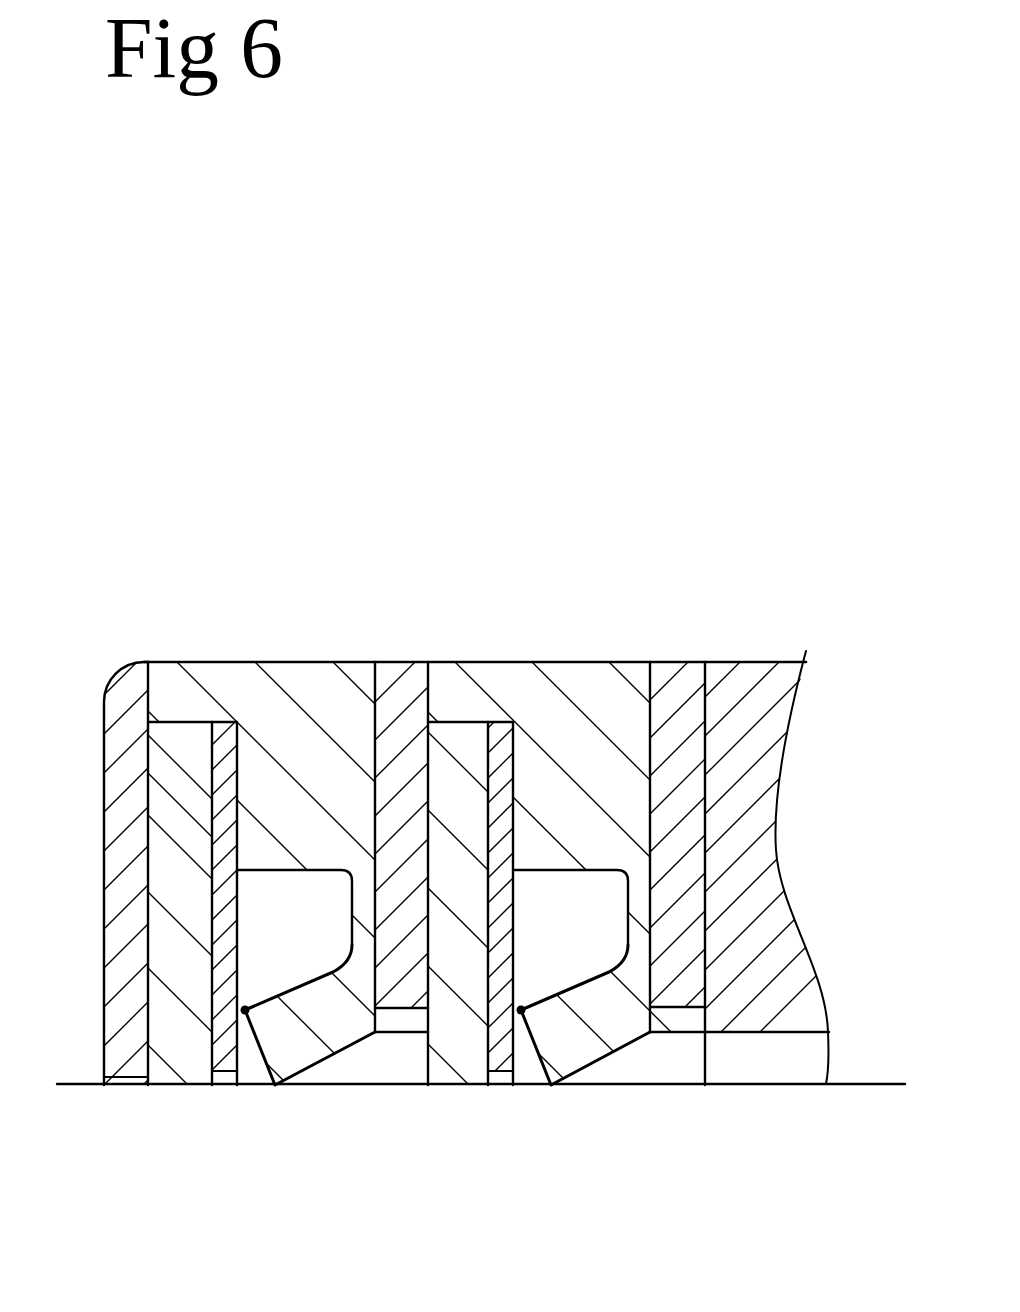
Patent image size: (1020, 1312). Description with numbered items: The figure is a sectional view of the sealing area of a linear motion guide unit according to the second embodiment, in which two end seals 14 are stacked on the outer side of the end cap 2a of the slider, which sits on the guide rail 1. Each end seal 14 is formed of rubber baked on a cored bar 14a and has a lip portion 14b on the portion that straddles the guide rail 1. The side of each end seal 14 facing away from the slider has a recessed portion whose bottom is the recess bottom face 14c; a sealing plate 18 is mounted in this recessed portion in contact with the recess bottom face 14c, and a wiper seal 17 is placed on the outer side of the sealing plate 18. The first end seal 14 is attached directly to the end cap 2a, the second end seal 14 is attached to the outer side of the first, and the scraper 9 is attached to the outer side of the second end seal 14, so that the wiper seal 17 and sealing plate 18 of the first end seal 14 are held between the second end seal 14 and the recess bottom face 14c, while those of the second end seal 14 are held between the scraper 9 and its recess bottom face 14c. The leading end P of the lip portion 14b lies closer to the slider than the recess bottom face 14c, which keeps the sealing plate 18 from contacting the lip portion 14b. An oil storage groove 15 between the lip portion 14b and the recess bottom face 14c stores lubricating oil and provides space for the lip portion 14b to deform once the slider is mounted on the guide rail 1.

The guide rail 1 is at (861, 1094).
The end cap 2a is at (732, 680).
The scraper 9 is at (122, 950).
The end seal 14 is at (317, 648).
The cored bar 14a is at (398, 675).
The lip portion 14b is at (318, 1048).
The recess bottom face 14c is at (230, 755).
The oil storage groove 15 is at (293, 978).
The wiper seal 17 is at (163, 1068).
The sealing plate 18 is at (222, 1063).
The leading end P is at (245, 1010).